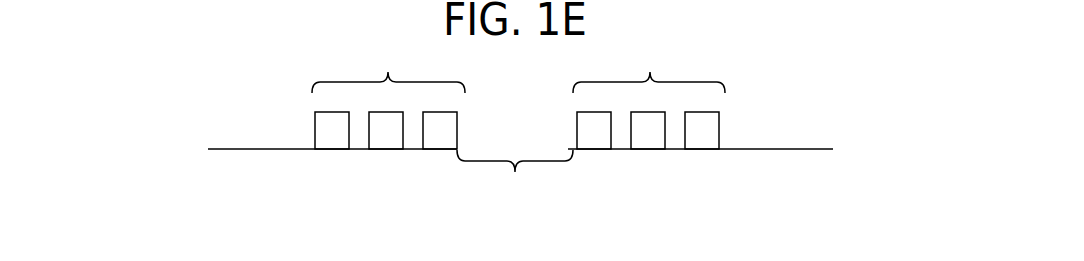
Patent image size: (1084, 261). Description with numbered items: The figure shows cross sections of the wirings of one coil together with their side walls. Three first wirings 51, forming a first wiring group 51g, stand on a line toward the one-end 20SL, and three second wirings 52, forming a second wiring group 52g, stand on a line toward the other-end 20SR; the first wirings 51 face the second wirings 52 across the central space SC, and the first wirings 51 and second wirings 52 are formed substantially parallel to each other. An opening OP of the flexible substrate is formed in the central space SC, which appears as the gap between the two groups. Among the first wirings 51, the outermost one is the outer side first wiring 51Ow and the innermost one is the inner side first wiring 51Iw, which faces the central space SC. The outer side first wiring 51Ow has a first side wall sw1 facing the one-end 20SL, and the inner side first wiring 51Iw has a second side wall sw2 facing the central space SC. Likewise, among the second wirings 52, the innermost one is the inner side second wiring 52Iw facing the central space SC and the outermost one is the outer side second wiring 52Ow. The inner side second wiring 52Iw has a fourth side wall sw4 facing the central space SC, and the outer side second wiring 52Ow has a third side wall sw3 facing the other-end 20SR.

The one-end 20SL is at (293, 149).
The other-end 20SR is at (740, 144).
The first wirings 51 is at (385, 181).
The first wiring group 51g is at (388, 68).
The outer side first wiring 51Ow is at (332, 141).
The inner side first wiring 51Iw is at (441, 141).
The second wirings 52 is at (660, 181).
The second wiring group 52g is at (649, 68).
The inner side second wiring 52Iw is at (597, 140).
The outer side second wiring 52Ow is at (703, 140).
The first side wall sw1 is at (314, 133).
The second side wall sw2 is at (457, 128).
The third side wall sw3 is at (720, 128).
The fourth side wall sw4 is at (576, 131).
The opening OP is at (470, 148).
The central space SC is at (515, 178).